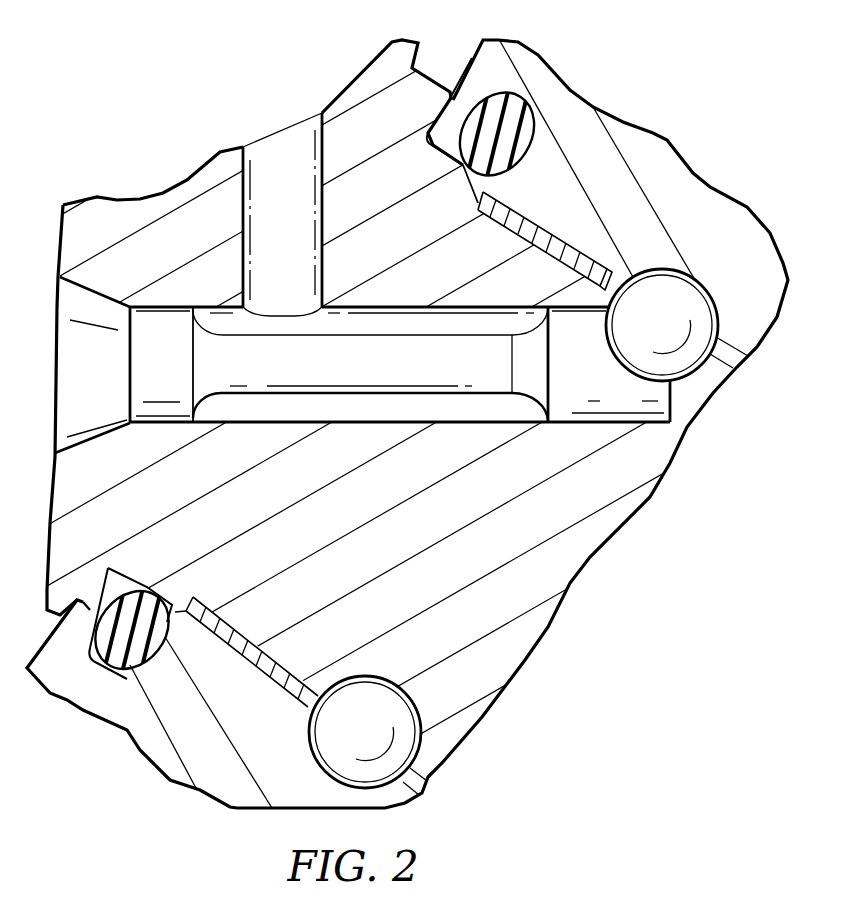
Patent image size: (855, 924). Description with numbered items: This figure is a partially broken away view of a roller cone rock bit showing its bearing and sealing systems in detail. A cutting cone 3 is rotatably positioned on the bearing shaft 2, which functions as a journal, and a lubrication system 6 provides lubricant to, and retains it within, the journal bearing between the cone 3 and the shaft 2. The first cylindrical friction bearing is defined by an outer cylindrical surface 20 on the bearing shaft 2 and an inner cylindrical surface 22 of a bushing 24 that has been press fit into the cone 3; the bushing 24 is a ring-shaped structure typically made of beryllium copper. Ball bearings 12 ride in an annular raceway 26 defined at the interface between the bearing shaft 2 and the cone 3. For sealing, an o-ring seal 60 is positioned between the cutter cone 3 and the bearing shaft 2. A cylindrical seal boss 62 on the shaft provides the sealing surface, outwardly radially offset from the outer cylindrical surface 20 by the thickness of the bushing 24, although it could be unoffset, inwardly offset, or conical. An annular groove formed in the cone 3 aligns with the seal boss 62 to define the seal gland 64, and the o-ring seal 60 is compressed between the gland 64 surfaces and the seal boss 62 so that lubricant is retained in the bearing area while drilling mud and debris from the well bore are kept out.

The bearing shaft 2 is at (477, 617).
The cutting cone 3 is at (658, 135).
The lubrication system 6 is at (278, 333).
The ball bearings 12 is at (632, 357).
The outer cylindrical surface 20 is at (545, 255).
The inner cylindrical surface 22 is at (585, 251).
The bushing 24 is at (500, 203).
The annular raceway 26 is at (690, 293).
The o-ring seal 60 is at (502, 110).
The seal boss 62 is at (465, 174).
The seal gland 64 is at (520, 88).